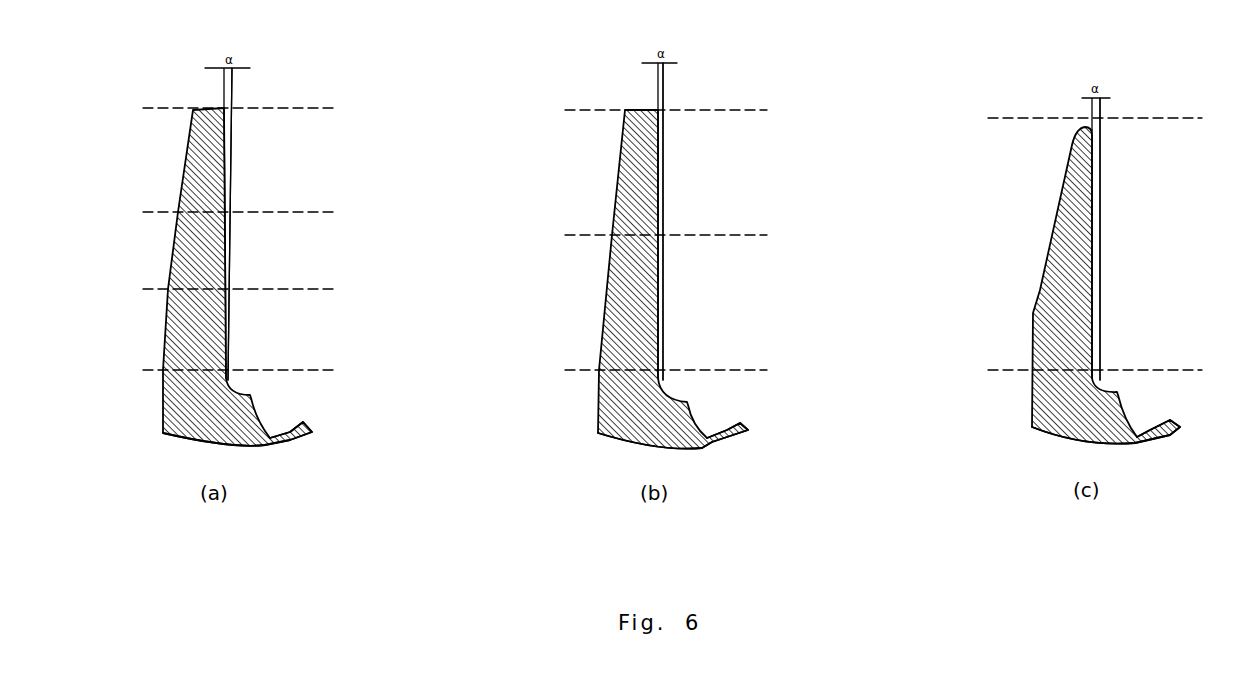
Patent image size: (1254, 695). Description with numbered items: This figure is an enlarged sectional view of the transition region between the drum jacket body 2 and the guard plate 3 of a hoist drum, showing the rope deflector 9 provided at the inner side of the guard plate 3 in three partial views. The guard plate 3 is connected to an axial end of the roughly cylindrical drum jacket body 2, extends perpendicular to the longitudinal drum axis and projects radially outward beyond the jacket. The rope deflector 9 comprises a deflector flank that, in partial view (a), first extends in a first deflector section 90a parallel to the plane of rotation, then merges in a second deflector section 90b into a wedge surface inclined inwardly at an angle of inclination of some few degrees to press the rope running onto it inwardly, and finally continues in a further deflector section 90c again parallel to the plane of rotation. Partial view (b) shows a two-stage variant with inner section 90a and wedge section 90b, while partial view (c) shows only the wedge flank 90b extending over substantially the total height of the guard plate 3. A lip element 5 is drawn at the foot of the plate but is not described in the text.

The guard plate 3 is at (194, 183).
The first deflector section 90a is at (242, 327).
The second deflector section 90b is at (244, 259).
The further deflector section 90c is at (248, 162).
The rope deflector 9 is at (316, 237).
The hook lip 5 is at (288, 432).
The drum jacket body 2 is at (272, 447).